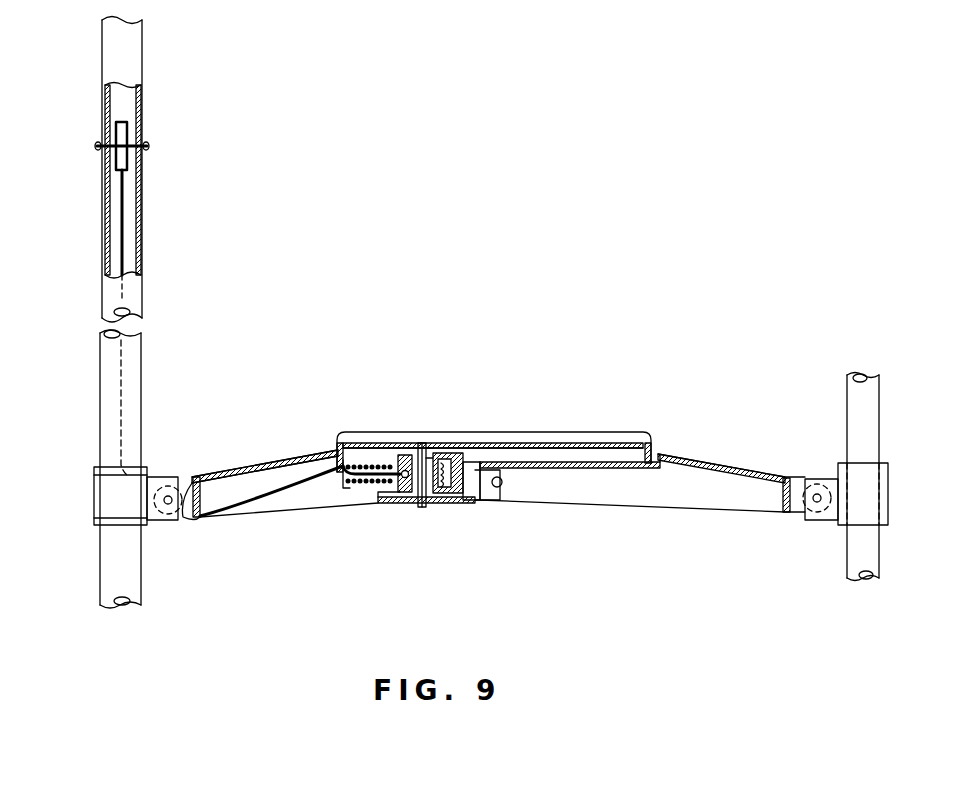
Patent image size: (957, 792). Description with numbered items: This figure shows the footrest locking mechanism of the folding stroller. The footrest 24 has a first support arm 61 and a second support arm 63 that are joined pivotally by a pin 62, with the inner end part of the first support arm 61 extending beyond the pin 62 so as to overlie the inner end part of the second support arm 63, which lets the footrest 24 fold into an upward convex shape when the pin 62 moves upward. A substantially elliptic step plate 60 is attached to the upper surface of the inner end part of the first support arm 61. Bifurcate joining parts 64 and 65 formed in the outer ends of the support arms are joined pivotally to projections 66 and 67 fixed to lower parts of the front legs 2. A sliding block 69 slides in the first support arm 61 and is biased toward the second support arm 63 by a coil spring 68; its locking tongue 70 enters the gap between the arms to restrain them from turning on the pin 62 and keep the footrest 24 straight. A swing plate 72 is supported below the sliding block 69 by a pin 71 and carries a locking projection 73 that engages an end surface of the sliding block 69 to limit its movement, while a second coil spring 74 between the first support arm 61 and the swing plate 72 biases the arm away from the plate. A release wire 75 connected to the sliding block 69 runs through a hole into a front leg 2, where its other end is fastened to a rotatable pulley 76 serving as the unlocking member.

The front leg 2 is at (143, 370).
The footrest 24 is at (578, 416).
The step plate 60 is at (470, 434).
The first support arm 61 is at (290, 455).
The pin 62 is at (500, 490).
The second support arm 63 is at (705, 460).
The joining part 64 is at (190, 487).
The joining part 65 is at (795, 478).
The projection 66 is at (158, 527).
The projection 67 is at (832, 520).
The coil spring 68 is at (352, 500).
The sliding block 69 is at (400, 500).
The locking tongue 70 is at (490, 436).
The pin 71 is at (425, 505).
The swing plate 72 is at (450, 505).
The locking projection 73 is at (365, 503).
The second coil spring 74 is at (440, 432).
The release wire 75 is at (262, 503).
The pulley 76 is at (140, 125).